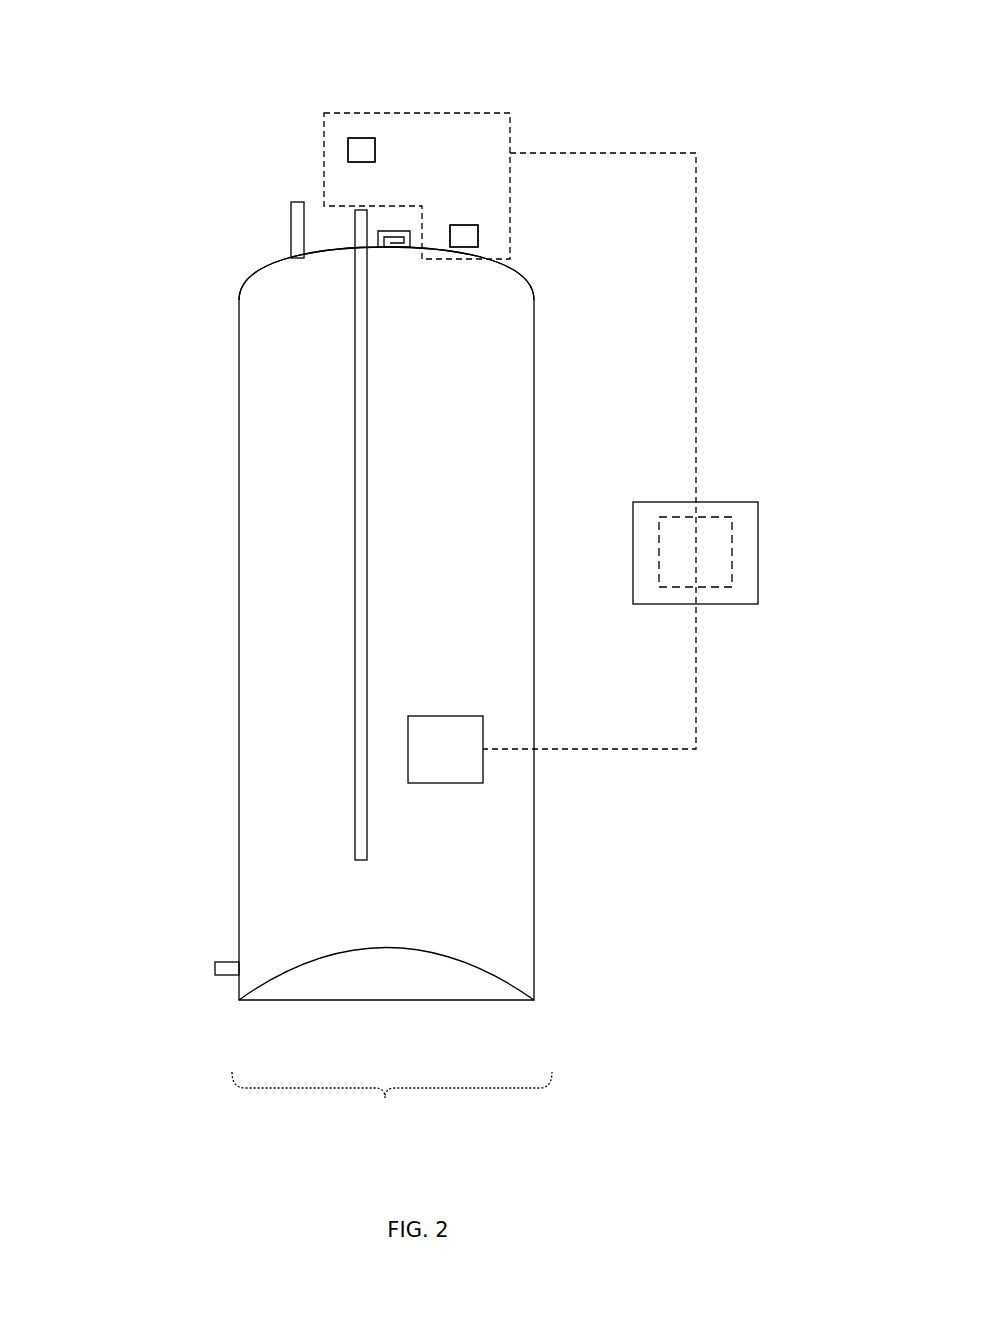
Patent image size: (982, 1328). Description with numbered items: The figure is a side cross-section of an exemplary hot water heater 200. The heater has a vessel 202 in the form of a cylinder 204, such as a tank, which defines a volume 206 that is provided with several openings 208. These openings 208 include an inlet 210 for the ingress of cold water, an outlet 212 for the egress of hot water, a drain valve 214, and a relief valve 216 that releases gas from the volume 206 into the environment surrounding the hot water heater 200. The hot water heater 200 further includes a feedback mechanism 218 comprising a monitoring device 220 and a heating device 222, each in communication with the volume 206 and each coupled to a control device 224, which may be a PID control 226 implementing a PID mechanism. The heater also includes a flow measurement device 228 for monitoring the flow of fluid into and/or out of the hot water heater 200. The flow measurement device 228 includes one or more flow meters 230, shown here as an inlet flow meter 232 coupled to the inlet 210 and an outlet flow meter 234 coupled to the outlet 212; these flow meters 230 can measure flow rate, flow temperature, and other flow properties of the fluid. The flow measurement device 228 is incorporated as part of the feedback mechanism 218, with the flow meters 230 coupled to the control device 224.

The hot water heater 200 is at (140, 46).
The vessel 202 is at (234, 388).
The cylinder 204 is at (392, 1103).
The volume 206 is at (507, 300).
The openings 208 is at (378, 264).
The inlet 210 is at (355, 429).
The outlet 212 is at (397, 250).
The drain valve 214 is at (222, 977).
The relief valve 216 is at (291, 222).
The feedback mechanism 218 is at (728, 142).
The monitoring device 220 is at (517, 67).
The heating device 222 is at (452, 716).
The control device 224 is at (633, 554).
The PID control 226 is at (732, 539).
The flow measurement device 228 is at (511, 125).
The flow meters 230 is at (348, 134).
The inlet flow meter 232 is at (367, 138).
The outlet flow meter 234 is at (478, 232).